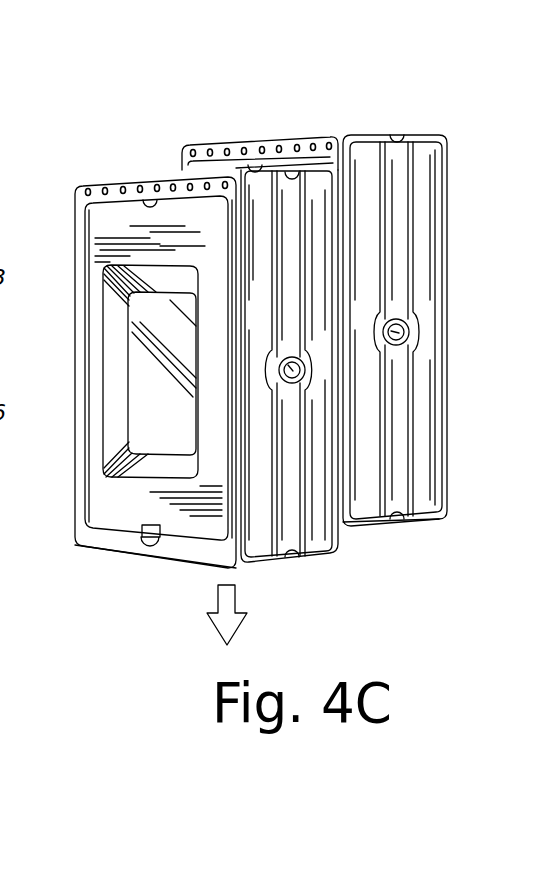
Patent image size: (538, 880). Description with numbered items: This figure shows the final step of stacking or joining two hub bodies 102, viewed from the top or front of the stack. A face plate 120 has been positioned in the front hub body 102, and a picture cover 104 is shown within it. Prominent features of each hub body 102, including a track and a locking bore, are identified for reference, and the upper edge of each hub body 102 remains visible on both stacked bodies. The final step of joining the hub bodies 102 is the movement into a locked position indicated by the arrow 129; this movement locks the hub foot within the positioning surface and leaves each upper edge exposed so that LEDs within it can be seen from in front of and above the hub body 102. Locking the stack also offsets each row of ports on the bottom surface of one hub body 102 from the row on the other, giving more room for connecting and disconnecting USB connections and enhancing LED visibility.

The hub body 102 is at (430, 180).
The picture cover 104 is at (170, 431).
The face plate 120 is at (109, 225).
The arrow 129 is at (217, 622).